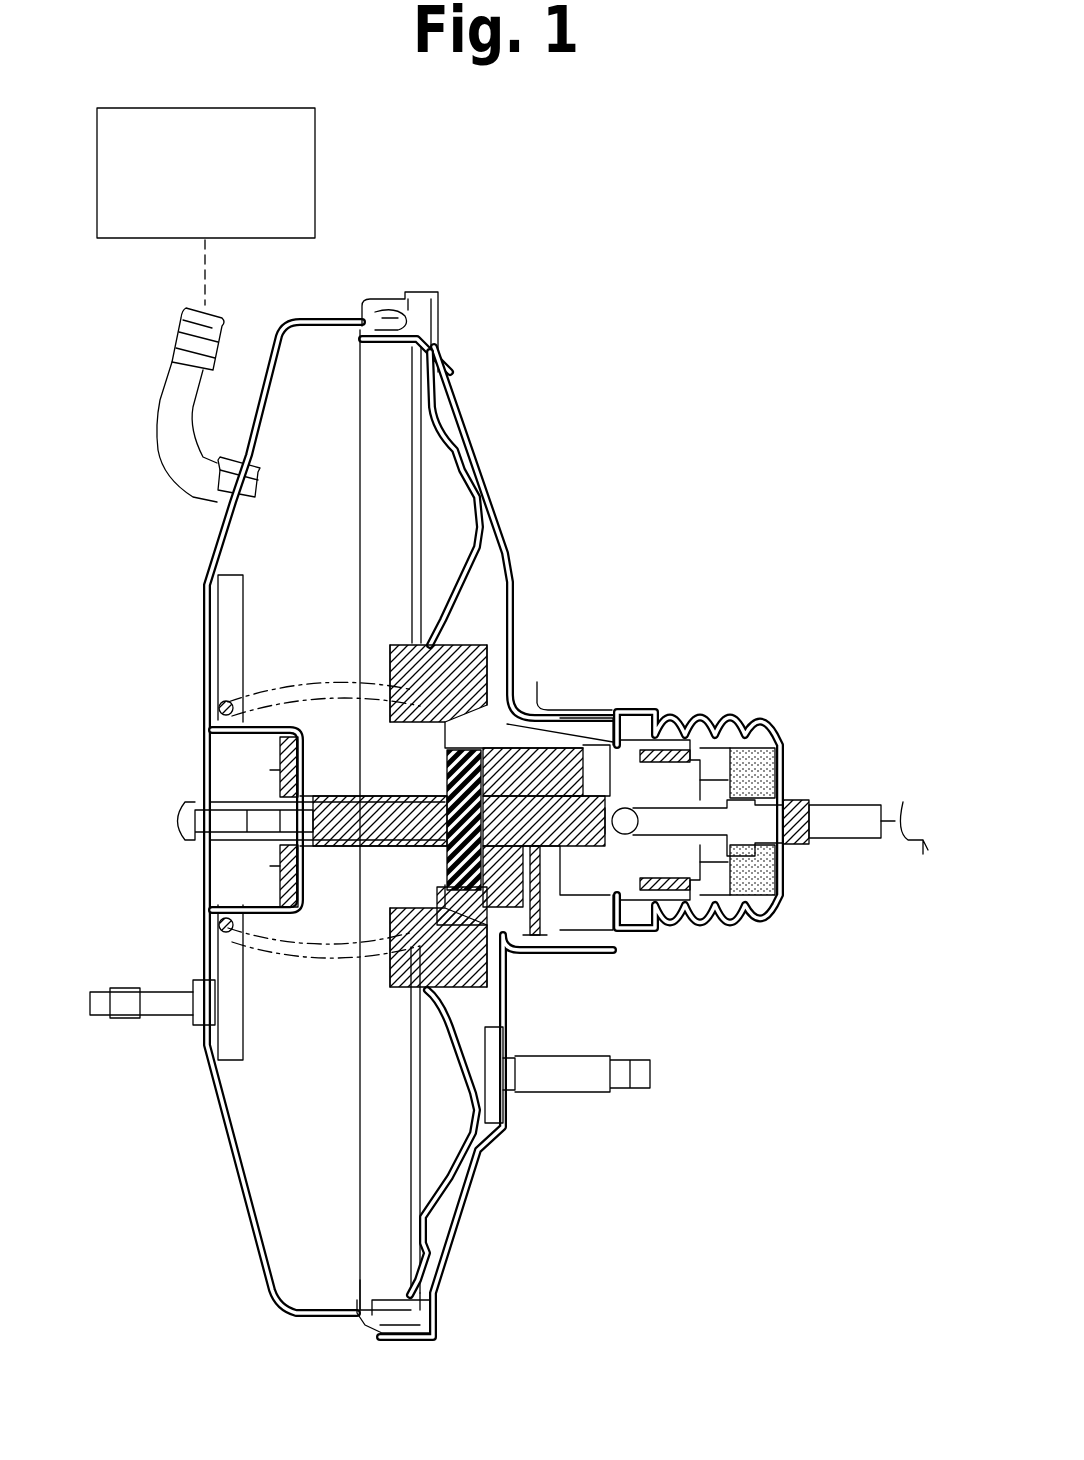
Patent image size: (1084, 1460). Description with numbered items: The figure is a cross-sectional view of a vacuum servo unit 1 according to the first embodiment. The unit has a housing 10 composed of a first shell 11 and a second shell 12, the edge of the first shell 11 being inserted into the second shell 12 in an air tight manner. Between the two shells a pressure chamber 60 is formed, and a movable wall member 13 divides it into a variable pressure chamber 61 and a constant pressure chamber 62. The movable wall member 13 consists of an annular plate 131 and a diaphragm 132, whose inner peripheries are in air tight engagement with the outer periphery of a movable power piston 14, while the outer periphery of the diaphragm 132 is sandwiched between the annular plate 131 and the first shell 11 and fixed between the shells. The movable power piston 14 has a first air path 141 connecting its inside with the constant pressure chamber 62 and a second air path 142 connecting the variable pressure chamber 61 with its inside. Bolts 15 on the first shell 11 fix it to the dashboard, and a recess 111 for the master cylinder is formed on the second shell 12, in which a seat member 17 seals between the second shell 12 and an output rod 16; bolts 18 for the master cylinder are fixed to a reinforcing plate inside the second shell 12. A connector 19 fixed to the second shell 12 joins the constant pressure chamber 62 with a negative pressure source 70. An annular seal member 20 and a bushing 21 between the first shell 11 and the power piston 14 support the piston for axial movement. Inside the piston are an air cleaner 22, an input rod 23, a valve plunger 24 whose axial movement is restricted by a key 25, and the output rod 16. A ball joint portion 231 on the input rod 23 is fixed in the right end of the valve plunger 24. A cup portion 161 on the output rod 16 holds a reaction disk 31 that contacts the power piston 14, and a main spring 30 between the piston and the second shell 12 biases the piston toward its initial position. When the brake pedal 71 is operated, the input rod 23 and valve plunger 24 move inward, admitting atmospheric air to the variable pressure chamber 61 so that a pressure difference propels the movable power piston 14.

The vacuum servo unit 1 is at (707, 540).
The housing 10 is at (365, 224).
The first shell 11 is at (453, 372).
The second shell 12 is at (360, 318).
The movable wall member 13 is at (588, 374).
The annular plate 131 is at (453, 453).
The diaphragm 132 is at (463, 472).
The movable power piston 14 is at (500, 717).
The first air path 141 is at (520, 717).
The second air path 142 is at (612, 922).
The bolts 15 is at (612, 1077).
The output rod 16 is at (233, 838).
The cup portion 161 is at (438, 880).
The seat member 17 is at (285, 866).
The bolts 18 is at (135, 1000).
The connector 19 is at (160, 425).
The annular seal member 20 is at (615, 720).
The bushing 21 is at (680, 722).
The air cleaner 22 is at (767, 775).
The input rod 23 is at (850, 810).
The ball joint portion 231 is at (628, 823).
The valve plunger 24 is at (545, 717).
The key 25 is at (523, 947).
The main spring 30 is at (222, 703).
The reaction disk 31 is at (447, 780).
The pressure chamber 60 is at (560, 1180).
The variable pressure chamber 61 is at (443, 1213).
The constant pressure chamber 62 is at (327, 1270).
The negative pressure source 70 is at (112, 240).
The brake pedal 71 is at (905, 807).
The recess 111 is at (217, 757).